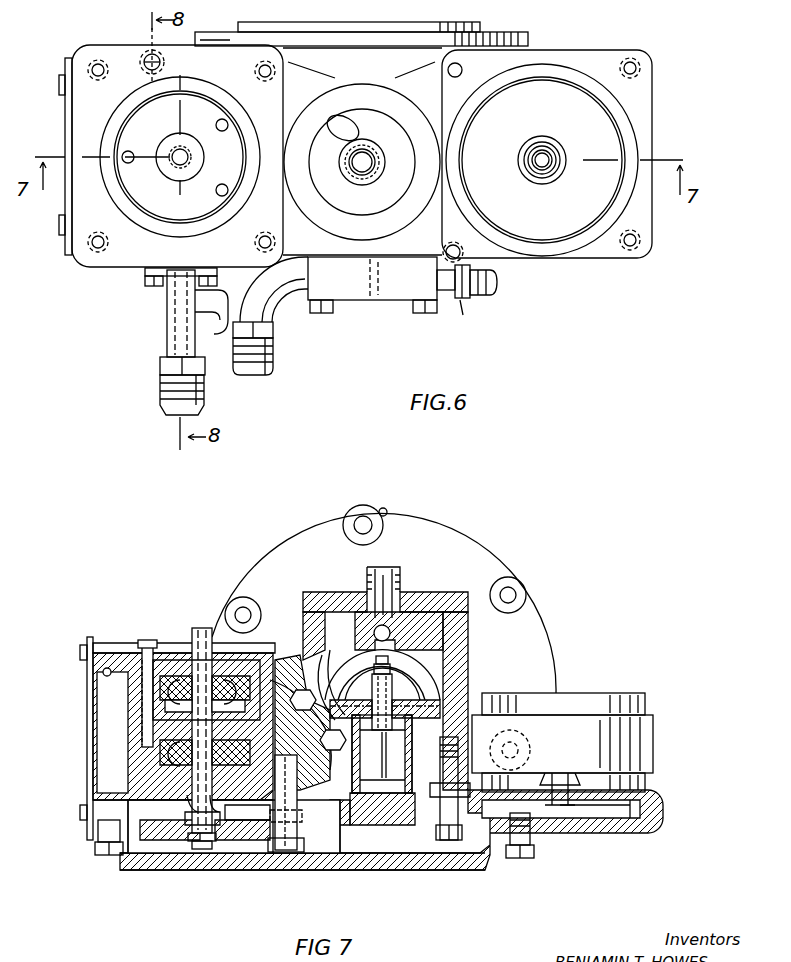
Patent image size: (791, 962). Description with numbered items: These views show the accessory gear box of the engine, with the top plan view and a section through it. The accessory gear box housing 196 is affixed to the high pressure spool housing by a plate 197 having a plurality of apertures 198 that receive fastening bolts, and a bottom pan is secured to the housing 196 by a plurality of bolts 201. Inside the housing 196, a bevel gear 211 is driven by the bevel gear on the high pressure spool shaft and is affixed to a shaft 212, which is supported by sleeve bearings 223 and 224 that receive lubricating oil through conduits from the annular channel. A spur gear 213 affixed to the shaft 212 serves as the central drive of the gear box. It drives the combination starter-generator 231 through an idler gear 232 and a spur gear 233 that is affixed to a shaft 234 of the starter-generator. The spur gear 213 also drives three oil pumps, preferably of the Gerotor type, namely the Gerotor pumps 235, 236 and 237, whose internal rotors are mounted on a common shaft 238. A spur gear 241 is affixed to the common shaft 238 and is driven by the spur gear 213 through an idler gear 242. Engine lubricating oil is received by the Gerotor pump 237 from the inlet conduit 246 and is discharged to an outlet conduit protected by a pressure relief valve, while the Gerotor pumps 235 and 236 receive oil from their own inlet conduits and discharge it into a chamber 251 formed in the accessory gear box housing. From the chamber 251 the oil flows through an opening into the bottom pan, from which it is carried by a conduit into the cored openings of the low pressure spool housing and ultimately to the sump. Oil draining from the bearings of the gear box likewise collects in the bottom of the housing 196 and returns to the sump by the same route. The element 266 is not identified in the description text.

In FIG. 6, the accessory gear box housing 196 is at (582, 48).
In FIG. 6, the plate 197 is at (524, 40).
In FIG. 7, the plate 197 is at (511, 566).
In FIG. 7, the apertures 198 is at (363, 518).
In FIG. 7, the bolts 201 is at (112, 852).
In FIG. 7, the bevel gear 211 is at (445, 690).
In FIG. 7, the shaft 212 is at (366, 752).
In FIG. 7, the spur gear 213 is at (340, 824).
In FIG. 7, the sleeve bearing 223 is at (440, 708).
In FIG. 7, the sleeve bearing 224 is at (386, 824).
In FIG. 6, the combination starter-generator 231 is at (588, 124).
In FIG. 7, the combination starter-generator 231 is at (612, 697).
In FIG. 7, the idler gear 232 is at (455, 835).
In FIG. 7, the spur gear 233 is at (630, 806).
In FIG. 7, the shaft 234 is at (560, 786).
In FIG. 7, the Gerotor pump 235 is at (172, 686).
In FIG. 7, the Gerotor pump 236 is at (165, 706).
In FIG. 7, the Gerotor pump 237 is at (170, 756).
In FIG. 6, the common shaft 238 is at (188, 156).
In FIG. 7, the common shaft 238 is at (201, 650).
In FIG. 7, the spur gear 241 is at (187, 832).
In FIG. 7, the idler gear 242 is at (308, 842).
In FIG. 6, the inlet conduit 246 is at (212, 330).
In FIG. 7, the chamber 251 is at (108, 668).
In FIG. 7, the base plate 266 is at (400, 862).